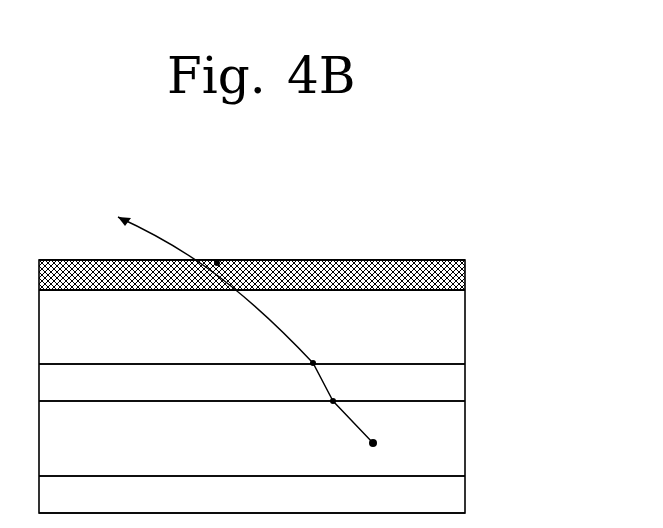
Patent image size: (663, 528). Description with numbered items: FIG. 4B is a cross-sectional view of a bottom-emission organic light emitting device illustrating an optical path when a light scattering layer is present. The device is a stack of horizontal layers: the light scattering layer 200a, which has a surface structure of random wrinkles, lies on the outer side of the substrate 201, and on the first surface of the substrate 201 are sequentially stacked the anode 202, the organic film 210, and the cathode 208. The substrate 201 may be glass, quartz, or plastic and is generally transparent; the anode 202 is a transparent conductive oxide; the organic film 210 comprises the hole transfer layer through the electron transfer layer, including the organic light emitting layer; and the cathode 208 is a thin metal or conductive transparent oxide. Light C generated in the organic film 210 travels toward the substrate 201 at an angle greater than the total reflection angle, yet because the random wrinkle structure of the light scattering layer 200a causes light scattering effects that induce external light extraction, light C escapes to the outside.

The light scattering layer 200a is at (465, 272).
The substrate 201 is at (457, 325).
The anode 202 is at (457, 379).
The organic film 210 is at (457, 438).
The cathode 208 is at (457, 493).
The light C is at (238, 324).